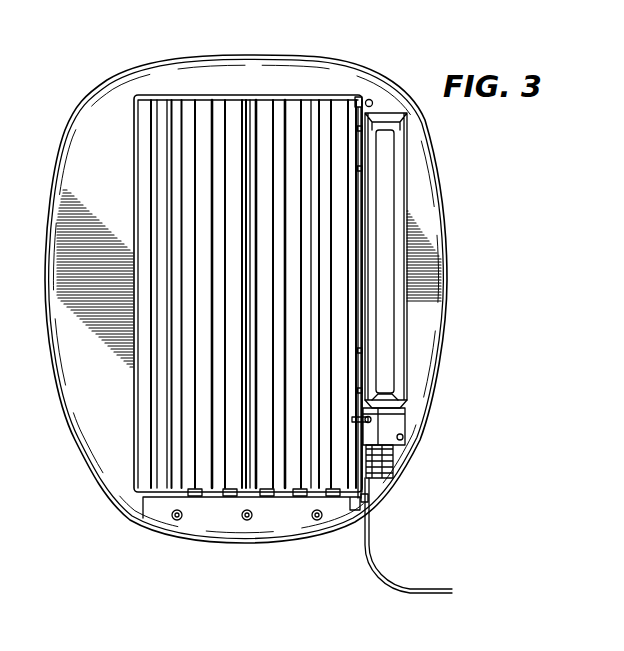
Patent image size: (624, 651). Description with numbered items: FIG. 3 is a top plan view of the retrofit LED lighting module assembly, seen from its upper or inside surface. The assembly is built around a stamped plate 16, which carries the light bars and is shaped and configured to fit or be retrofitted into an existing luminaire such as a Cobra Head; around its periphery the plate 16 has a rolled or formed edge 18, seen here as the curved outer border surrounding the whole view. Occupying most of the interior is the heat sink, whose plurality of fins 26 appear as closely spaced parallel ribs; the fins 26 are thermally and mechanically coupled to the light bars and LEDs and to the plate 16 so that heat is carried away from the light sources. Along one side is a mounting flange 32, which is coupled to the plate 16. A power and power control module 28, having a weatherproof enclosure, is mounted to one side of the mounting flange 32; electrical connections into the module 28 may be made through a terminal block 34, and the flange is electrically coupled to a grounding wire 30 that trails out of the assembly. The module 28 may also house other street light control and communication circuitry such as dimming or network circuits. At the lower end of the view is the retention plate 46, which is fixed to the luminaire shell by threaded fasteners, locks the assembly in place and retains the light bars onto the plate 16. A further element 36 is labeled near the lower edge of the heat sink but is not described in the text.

The stamped plate 16 is at (428, 221).
The rolled or formed edge 18 is at (438, 164).
The fins 26 is at (197, 100).
The module 28 is at (402, 312).
The grounding wire 30 is at (382, 573).
The mounting flange 32 is at (365, 432).
The terminal block 34 is at (368, 477).
The clip 36 is at (195, 499).
The retention plate 46 is at (295, 523).